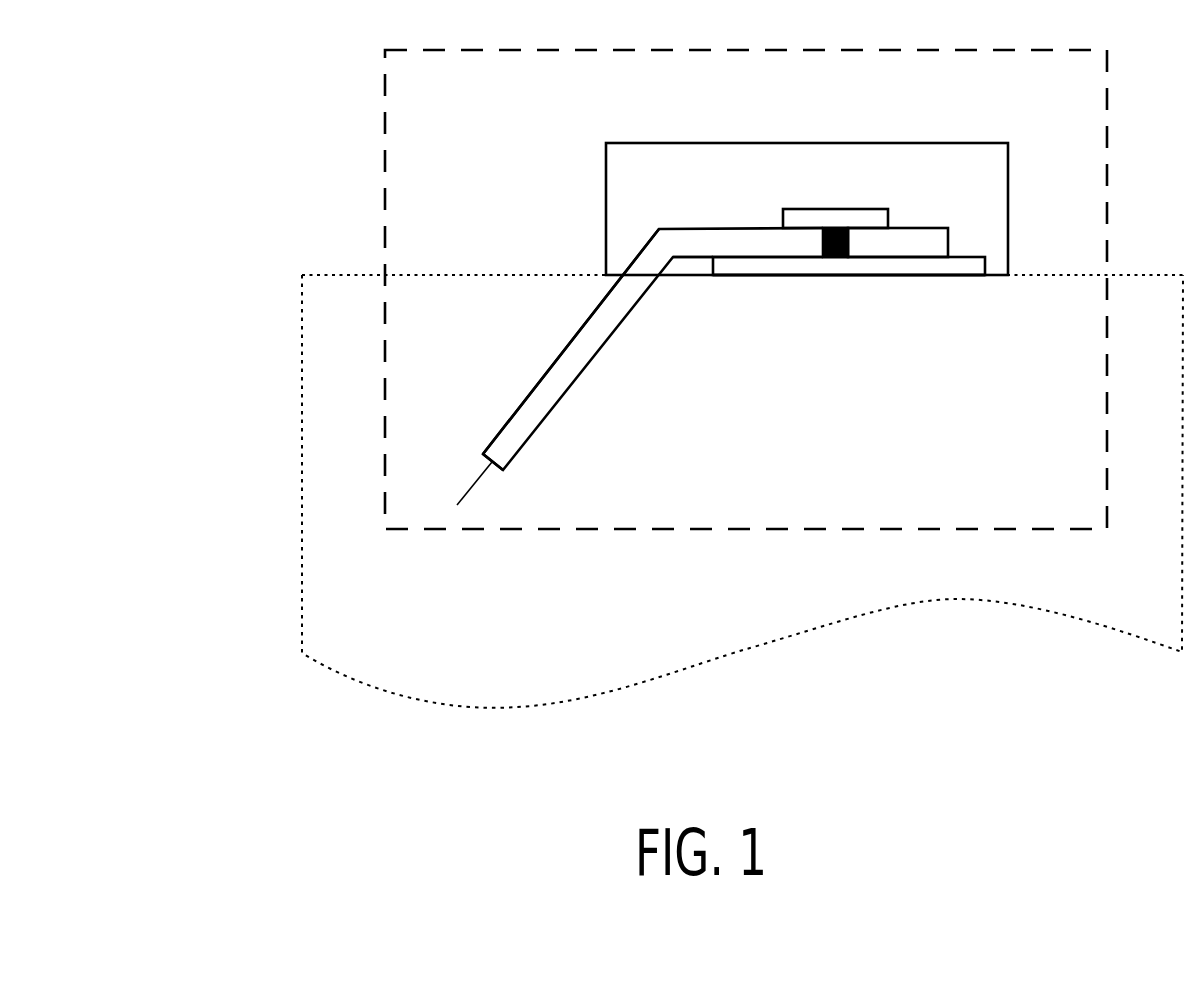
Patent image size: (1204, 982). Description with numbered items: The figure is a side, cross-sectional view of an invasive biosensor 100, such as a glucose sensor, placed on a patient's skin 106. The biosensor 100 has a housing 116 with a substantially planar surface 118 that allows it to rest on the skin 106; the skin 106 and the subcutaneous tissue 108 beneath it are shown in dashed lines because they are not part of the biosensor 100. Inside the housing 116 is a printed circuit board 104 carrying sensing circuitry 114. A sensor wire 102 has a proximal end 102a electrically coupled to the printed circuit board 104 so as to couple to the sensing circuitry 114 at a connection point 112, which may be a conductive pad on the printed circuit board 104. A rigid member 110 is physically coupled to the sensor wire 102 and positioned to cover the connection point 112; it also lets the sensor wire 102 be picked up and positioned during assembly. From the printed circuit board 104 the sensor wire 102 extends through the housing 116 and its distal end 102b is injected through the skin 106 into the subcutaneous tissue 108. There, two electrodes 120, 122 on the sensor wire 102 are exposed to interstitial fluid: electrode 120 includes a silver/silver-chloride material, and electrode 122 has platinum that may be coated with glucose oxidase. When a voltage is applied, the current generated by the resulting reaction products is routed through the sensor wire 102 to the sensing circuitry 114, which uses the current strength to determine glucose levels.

The biosensor 100 is at (383, 86).
The sensor wire 102 is at (598, 391).
The proximal end 102a is at (787, 257).
The distal end 102b is at (481, 454).
The printed circuit board 104 is at (985, 268).
The skin 106 is at (337, 275).
The subcutaneous tissue 108 is at (304, 330).
The rigid member 110 is at (783, 222).
The connection point 112 is at (833, 257).
The sensing circuitry 114 is at (948, 243).
The housing 116 is at (605, 158).
The surface 118 is at (685, 277).
The electrode 120 is at (583, 327).
The electrode 122 is at (482, 476).